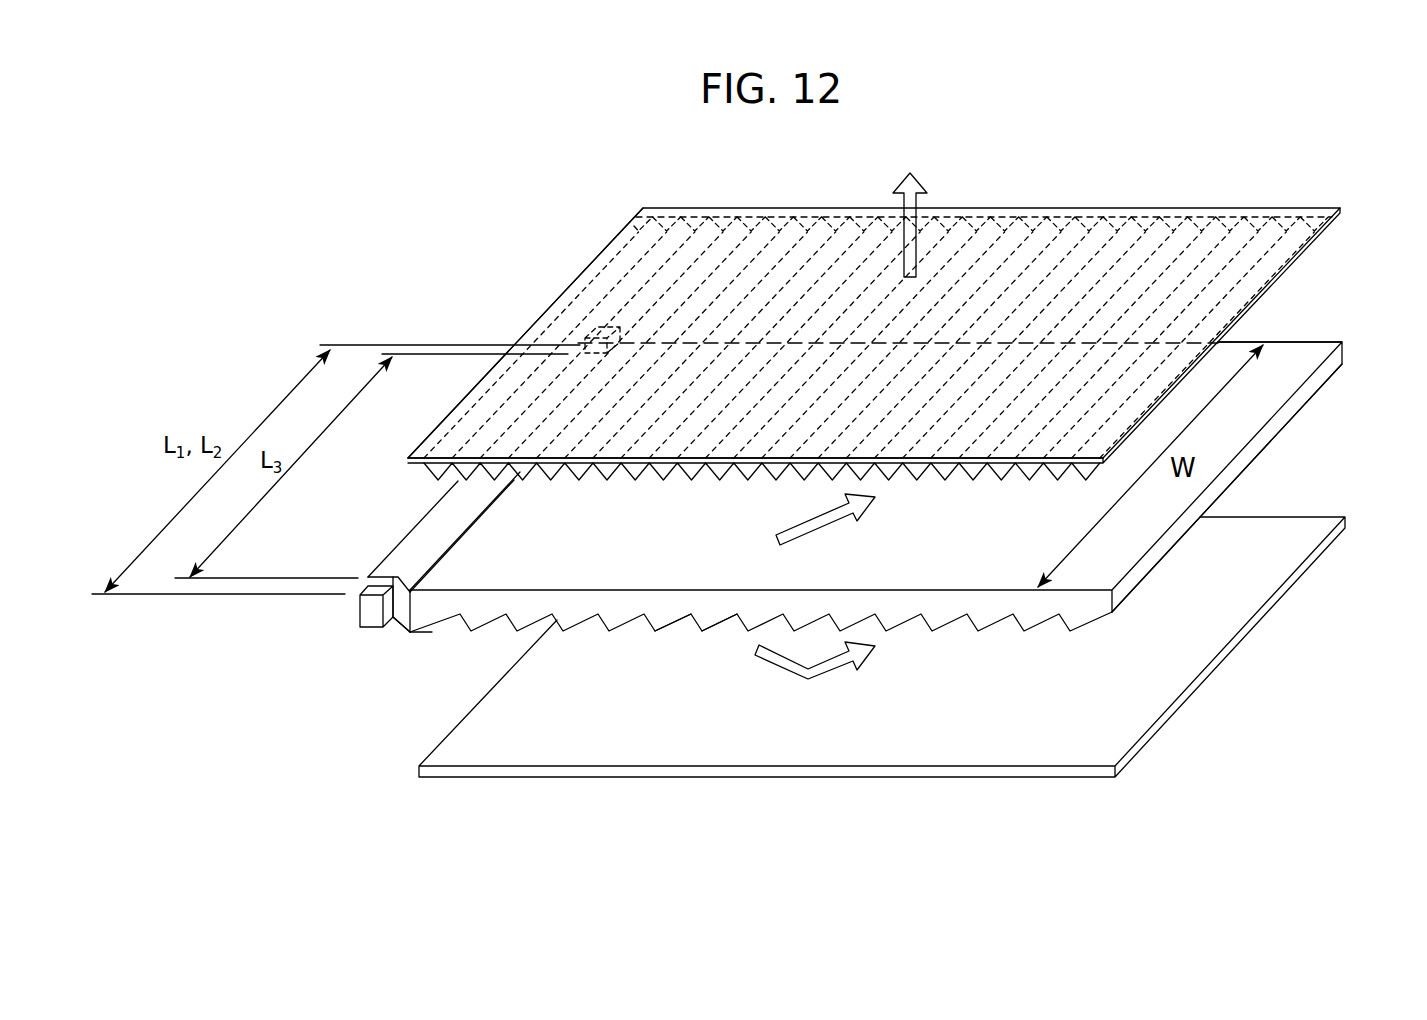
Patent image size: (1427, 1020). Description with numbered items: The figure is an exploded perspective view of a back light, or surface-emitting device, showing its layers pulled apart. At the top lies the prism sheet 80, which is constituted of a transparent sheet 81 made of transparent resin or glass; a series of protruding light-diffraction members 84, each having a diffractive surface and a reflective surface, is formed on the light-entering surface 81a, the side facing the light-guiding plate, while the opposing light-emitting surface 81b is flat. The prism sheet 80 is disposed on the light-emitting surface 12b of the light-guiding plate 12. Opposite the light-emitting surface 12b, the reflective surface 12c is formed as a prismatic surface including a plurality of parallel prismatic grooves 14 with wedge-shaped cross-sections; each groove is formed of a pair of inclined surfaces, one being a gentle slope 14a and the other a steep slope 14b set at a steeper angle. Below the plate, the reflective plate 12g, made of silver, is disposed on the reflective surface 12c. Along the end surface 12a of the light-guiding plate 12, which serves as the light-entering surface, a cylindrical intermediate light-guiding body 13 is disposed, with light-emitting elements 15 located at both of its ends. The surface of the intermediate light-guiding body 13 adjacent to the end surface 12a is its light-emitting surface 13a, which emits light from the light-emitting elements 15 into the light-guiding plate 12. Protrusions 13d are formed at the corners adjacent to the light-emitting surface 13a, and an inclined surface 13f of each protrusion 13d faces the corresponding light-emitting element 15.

The prism sheet 80 is at (1322, 246).
The transparent sheet 81 is at (1272, 292).
The light-entering surface 81a is at (392, 472).
The light-emitting surface 81b is at (505, 370).
The light-diffraction member 84 is at (1029, 481).
The light-guiding plate 12 is at (1280, 448).
The end surface 12a is at (430, 567).
The light-emitting surface 12b is at (1292, 370).
The reflective surface 12c is at (1300, 417).
The reflective plate 12g is at (1194, 708).
The intermediate light-guiding body 13 is at (437, 532).
The light-emitting surface 13a is at (453, 553).
The protrusion 13d is at (407, 578).
The inclined surface 13f is at (397, 622).
The prismatic groove 14 is at (637, 638).
The gentle slope 14a is at (723, 627).
The steep slope 14b is at (693, 633).
The light-emitting element 15 is at (362, 590).